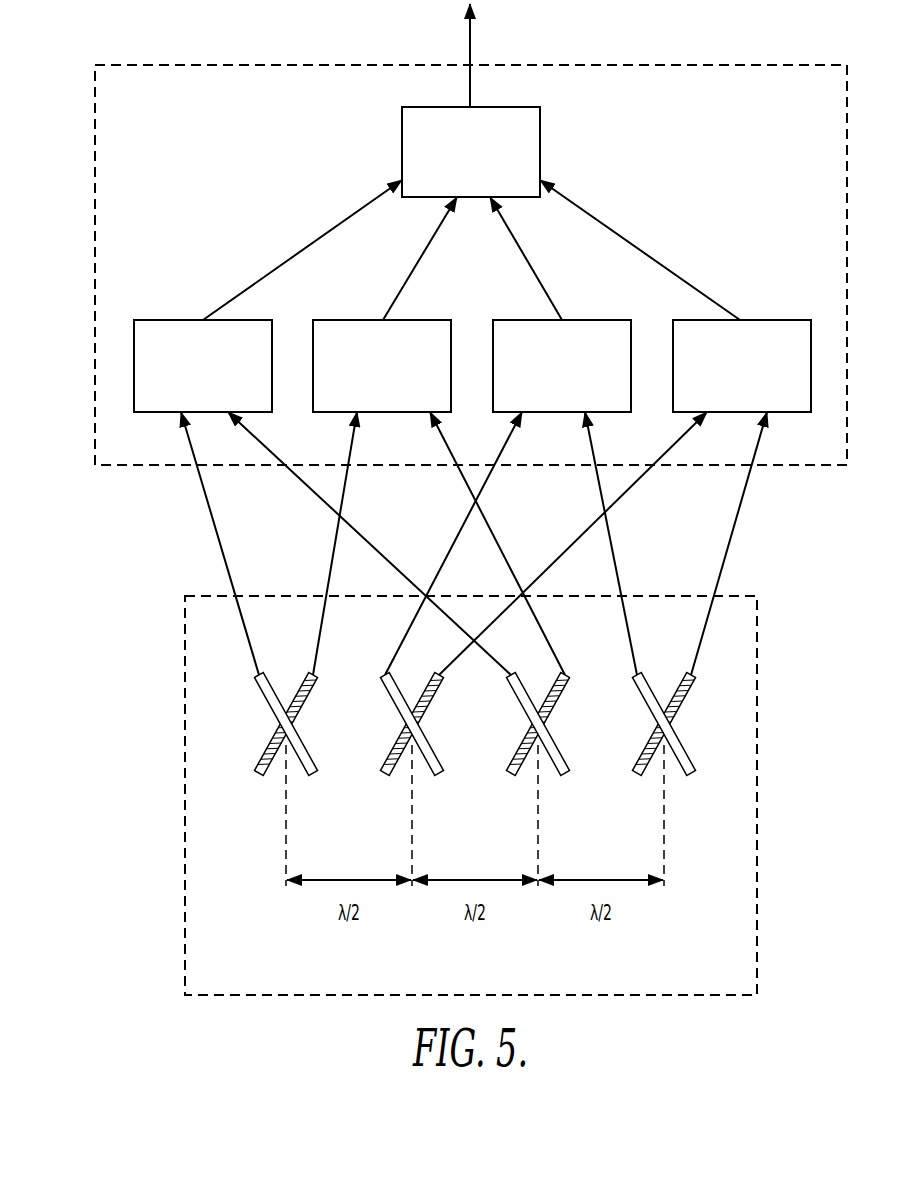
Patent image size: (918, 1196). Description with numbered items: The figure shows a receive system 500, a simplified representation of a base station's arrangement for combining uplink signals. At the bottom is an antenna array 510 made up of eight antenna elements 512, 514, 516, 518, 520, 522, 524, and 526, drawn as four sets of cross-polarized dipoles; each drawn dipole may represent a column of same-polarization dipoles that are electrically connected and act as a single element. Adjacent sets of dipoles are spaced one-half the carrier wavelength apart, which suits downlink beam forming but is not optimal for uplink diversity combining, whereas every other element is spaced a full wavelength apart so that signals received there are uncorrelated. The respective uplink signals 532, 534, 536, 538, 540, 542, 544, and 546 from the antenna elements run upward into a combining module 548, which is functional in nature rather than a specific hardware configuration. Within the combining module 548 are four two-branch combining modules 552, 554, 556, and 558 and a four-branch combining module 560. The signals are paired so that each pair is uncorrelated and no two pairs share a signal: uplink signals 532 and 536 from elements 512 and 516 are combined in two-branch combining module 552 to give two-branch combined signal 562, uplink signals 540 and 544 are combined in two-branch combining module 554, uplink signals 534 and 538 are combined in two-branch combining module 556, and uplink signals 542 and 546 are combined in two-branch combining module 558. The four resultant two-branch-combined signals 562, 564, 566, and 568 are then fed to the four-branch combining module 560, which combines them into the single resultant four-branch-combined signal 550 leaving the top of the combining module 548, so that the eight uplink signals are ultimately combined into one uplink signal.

The receive system 500 is at (66, 79).
The antenna array 510 is at (185, 622).
The antenna element 512 is at (268, 703).
The antenna element 514 is at (394, 703).
The antenna element 516 is at (520, 703).
The antenna element 518 is at (645, 703).
The antenna element 520 is at (258, 778).
The antenna element 522 is at (384, 778).
The antenna element 524 is at (510, 778).
The antenna element 526 is at (636, 778).
The uplink signal 532 is at (225, 560).
The uplink signal 534 is at (465, 523).
The uplink signal 536 is at (375, 547).
The uplink signal 538 is at (615, 570).
The uplink signal 540 is at (333, 568).
The uplink signal 542 is at (590, 528).
The uplink signal 544 is at (500, 547).
The uplink signal 546 is at (732, 542).
The combining module 548 is at (352, 66).
The single signal 550 is at (471, 50).
The two-branch combining module 552 is at (170, 320).
The two-branch combining module 554 is at (358, 320).
The two-branch combining module 556 is at (592, 320).
The two-branch combining module 558 is at (770, 320).
The four-branch combining module 560 is at (505, 107).
The two-branch combined signal 562 is at (323, 233).
The two-branch combined signal 564 is at (418, 264).
The two-branch combined signal 566 is at (528, 262).
The two-branch combined signal 568 is at (642, 248).